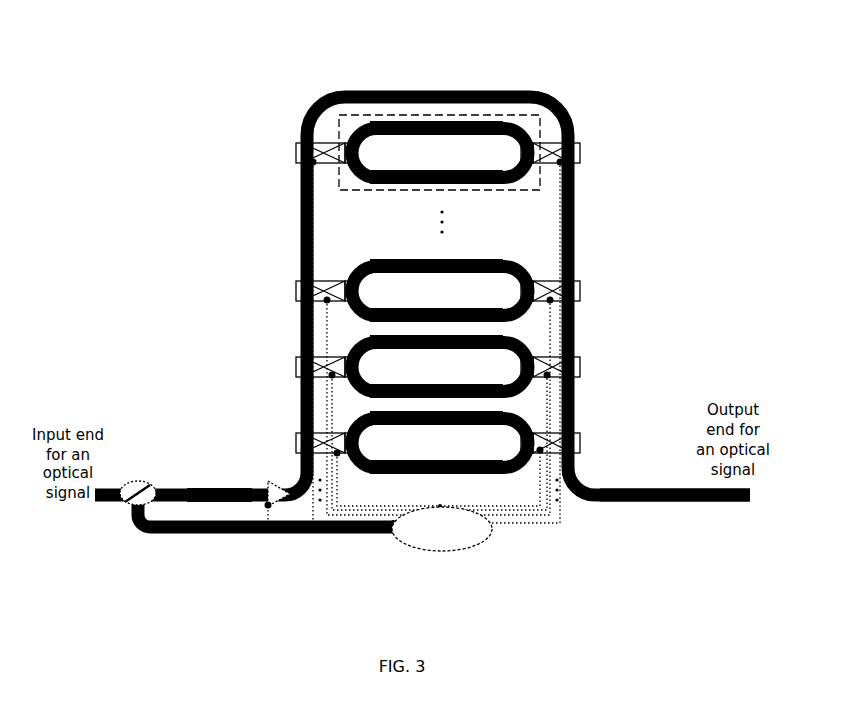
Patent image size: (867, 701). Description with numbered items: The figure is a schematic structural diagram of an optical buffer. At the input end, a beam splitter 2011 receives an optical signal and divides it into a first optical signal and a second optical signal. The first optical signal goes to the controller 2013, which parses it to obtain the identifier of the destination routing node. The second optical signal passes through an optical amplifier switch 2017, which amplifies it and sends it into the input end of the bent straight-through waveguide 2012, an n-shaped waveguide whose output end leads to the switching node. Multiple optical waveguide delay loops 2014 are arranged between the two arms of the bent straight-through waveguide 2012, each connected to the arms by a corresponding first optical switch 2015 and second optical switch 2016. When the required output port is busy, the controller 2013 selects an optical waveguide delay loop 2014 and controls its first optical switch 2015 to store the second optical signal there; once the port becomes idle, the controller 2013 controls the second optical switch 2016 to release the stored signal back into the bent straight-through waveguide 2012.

The beam splitter 2011 is at (138, 485).
The bent straight-through waveguide 2012 is at (590, 490).
The controller 2013 is at (442, 552).
The optical waveguide delay loop 2014 is at (435, 117).
The first optical switch 2015 is at (297, 153).
The second optical switch 2016 is at (579, 153).
The optical amplifier switch 2017 is at (268, 485).